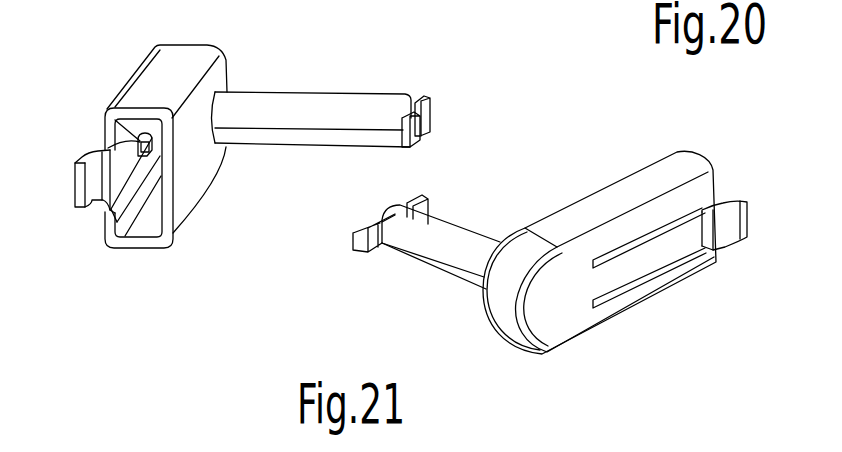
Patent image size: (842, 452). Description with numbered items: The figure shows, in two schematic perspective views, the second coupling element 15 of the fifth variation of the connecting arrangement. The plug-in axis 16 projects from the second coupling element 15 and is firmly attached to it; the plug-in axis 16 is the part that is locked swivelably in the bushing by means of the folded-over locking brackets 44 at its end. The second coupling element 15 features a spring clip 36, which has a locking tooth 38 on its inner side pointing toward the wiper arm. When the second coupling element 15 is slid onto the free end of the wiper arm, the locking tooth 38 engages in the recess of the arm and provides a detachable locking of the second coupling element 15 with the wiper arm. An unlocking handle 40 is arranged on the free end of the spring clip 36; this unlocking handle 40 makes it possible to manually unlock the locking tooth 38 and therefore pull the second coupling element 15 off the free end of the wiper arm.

The second coupling element 15 is at (183, 170).
The plug-in axis 16 is at (323, 110).
The spring clip 36 is at (129, 163).
The locking tooth 38 is at (140, 140).
The unlocking handle 40 is at (66, 200).
The locking brackets 44 is at (431, 100).